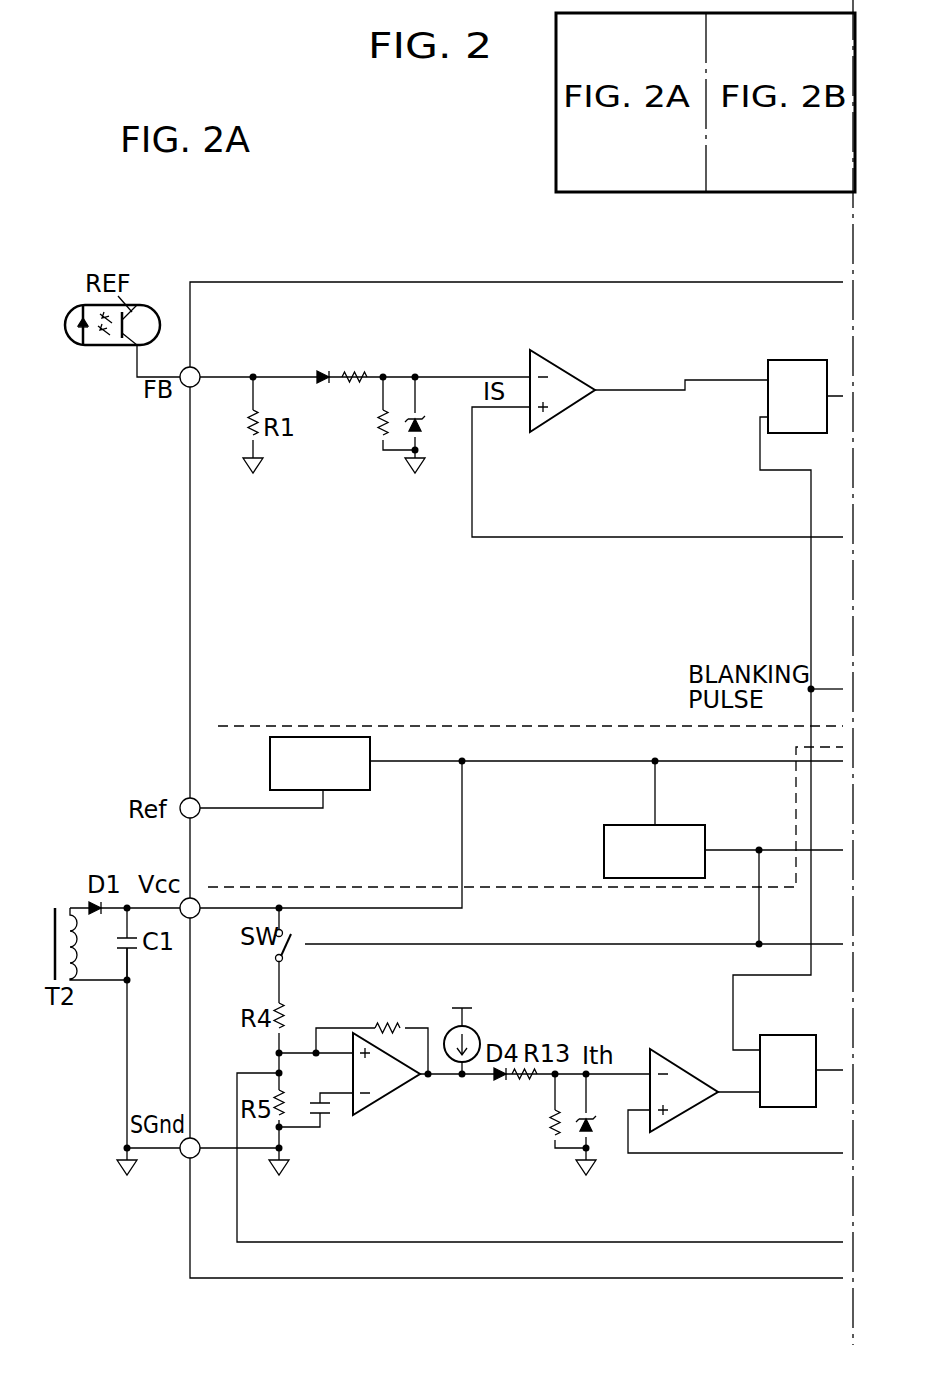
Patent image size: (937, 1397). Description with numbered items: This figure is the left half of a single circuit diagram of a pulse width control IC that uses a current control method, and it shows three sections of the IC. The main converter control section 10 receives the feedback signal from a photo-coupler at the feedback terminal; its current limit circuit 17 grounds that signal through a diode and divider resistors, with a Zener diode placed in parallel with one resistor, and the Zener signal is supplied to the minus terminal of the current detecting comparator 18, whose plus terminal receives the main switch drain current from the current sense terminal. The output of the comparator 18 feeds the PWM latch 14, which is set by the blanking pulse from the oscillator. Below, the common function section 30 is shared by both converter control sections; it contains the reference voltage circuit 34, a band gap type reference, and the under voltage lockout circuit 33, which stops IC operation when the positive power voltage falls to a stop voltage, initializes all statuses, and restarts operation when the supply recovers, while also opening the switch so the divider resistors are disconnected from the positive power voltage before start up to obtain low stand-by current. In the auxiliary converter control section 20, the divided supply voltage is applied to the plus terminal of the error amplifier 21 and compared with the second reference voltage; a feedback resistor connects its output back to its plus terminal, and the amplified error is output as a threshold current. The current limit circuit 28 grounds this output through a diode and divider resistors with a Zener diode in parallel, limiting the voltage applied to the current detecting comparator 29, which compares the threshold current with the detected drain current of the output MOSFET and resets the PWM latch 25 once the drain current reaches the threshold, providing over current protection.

The main converter control section 10 is at (348, 281).
The PWM latch 14 is at (775, 400).
The current limit circuit 17 is at (403, 387).
The current detecting comparator 18 is at (551, 362).
The auxiliary converter control section 20 is at (377, 1262).
The error amplifier 21 is at (353, 1040).
The PWM latch 25 is at (763, 1035).
The current limit circuit 28 is at (568, 1140).
The current detecting comparator 29 is at (653, 1130).
The common function section 30 is at (446, 774).
The under voltage lockout circuit 33 is at (603, 845).
The reference voltage circuit 34 is at (300, 737).